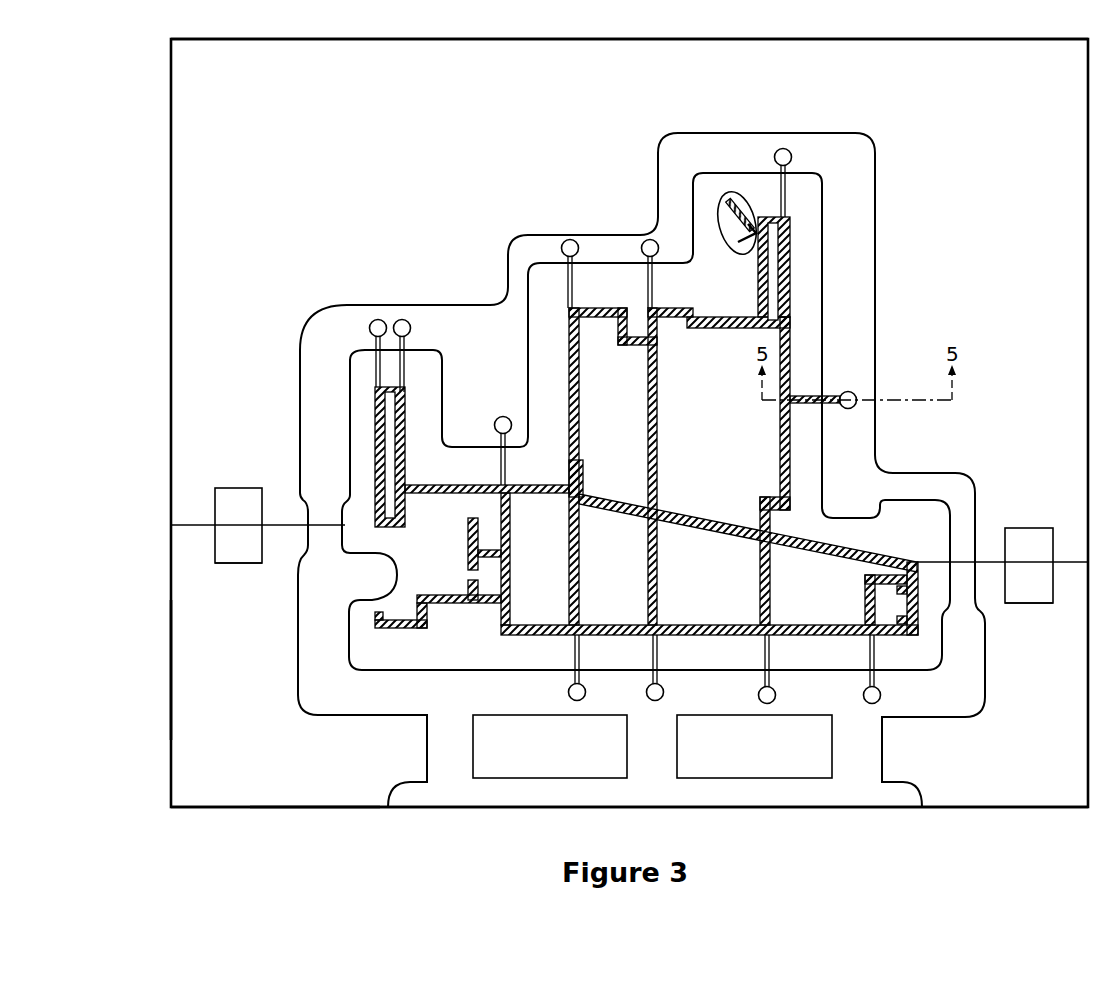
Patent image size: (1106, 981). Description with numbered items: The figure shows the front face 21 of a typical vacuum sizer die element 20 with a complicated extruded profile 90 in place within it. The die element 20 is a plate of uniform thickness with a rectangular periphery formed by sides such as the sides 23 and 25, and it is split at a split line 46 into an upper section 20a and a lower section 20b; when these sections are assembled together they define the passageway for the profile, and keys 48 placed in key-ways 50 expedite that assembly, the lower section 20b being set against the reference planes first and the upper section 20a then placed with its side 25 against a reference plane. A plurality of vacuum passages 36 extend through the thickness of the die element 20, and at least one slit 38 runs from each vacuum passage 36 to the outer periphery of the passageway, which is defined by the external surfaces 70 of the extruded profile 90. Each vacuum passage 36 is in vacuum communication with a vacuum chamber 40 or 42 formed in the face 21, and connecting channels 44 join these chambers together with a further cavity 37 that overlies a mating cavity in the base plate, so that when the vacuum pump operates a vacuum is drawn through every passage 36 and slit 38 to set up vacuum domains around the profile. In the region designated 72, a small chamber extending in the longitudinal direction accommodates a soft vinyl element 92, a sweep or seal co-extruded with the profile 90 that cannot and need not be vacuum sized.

The vacuum sizer die element 20 is at (657, 38).
The upper section 20a is at (245, 54).
The lower section 20b is at (212, 782).
The front face 21 is at (362, 108).
The side 23 is at (295, 810).
The side 25 is at (169, 672).
The vacuum passage 36 is at (402, 318).
The cavity 37 is at (752, 795).
The slit 38 is at (646, 278).
The vacuum chamber 40 is at (318, 672).
The vacuum chamber 42 is at (320, 323).
The connecting channel 44 is at (963, 508).
The split line 46 is at (186, 525).
The key 48 is at (236, 557).
The key-way 50 is at (247, 488).
The external surfaces of the extruded profile 70 is at (455, 485).
The small chamber 72 is at (722, 200).
The extruded profile 90 is at (787, 305).
The soft vinyl element 92 is at (745, 207).